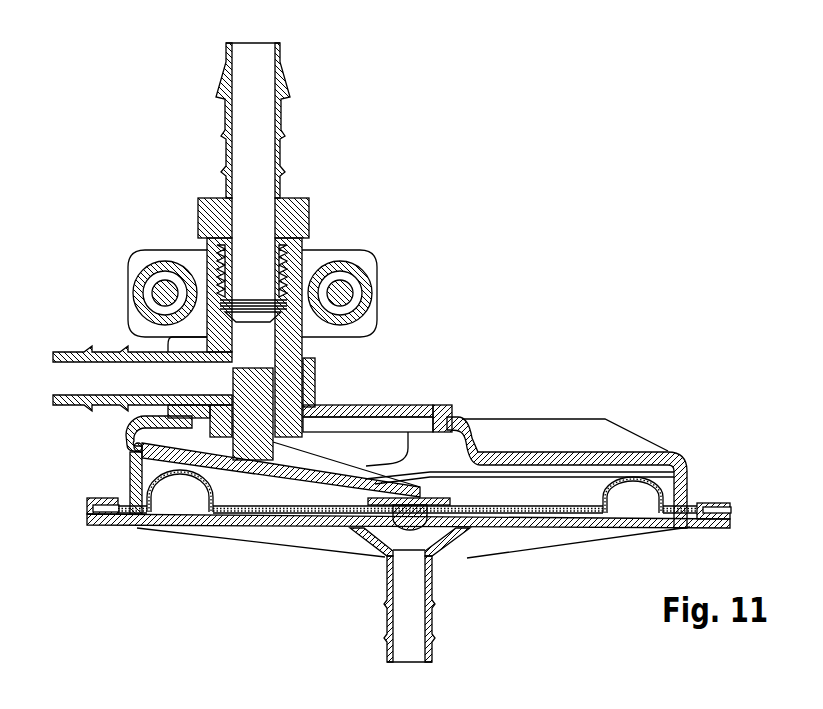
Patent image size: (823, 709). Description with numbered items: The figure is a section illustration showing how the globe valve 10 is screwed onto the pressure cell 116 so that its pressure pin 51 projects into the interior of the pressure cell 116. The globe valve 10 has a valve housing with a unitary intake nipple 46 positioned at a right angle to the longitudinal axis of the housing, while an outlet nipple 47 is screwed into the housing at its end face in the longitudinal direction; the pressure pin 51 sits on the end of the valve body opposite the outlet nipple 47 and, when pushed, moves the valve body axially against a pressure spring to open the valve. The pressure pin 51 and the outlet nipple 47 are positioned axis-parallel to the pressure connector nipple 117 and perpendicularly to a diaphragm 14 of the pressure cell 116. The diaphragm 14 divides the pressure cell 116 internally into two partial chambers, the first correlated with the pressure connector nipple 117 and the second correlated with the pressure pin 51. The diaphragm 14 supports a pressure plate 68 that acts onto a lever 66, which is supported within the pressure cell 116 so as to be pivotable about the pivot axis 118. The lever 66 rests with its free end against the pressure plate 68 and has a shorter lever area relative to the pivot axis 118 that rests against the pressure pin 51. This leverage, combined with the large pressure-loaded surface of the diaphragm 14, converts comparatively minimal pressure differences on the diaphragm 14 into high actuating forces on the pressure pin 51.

The globe valve 10 is at (317, 347).
The diaphragm 14 is at (195, 497).
The intake nipple 46 is at (62, 352).
The outlet nipple 47 is at (282, 58).
The pressure pin 51 is at (278, 382).
The lever 66 is at (367, 478).
The pressure plate 68 is at (277, 505).
The pressure cell 116 is at (648, 462).
The pressure connector nipple 117 is at (387, 634).
The pivot axis 118 is at (127, 450).